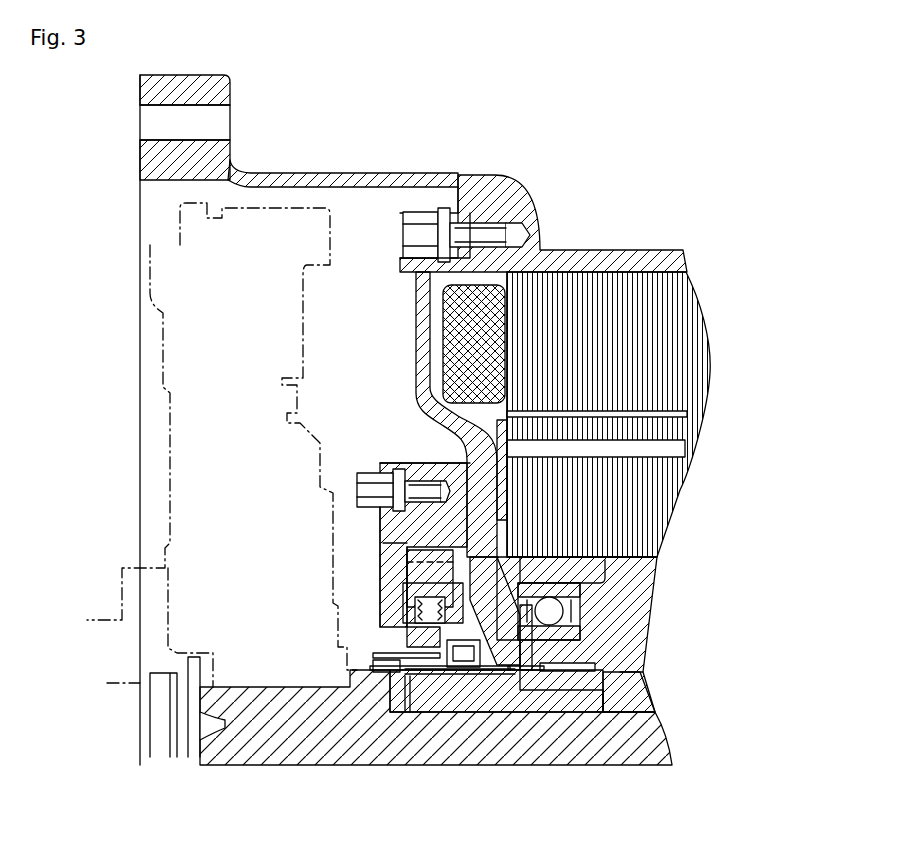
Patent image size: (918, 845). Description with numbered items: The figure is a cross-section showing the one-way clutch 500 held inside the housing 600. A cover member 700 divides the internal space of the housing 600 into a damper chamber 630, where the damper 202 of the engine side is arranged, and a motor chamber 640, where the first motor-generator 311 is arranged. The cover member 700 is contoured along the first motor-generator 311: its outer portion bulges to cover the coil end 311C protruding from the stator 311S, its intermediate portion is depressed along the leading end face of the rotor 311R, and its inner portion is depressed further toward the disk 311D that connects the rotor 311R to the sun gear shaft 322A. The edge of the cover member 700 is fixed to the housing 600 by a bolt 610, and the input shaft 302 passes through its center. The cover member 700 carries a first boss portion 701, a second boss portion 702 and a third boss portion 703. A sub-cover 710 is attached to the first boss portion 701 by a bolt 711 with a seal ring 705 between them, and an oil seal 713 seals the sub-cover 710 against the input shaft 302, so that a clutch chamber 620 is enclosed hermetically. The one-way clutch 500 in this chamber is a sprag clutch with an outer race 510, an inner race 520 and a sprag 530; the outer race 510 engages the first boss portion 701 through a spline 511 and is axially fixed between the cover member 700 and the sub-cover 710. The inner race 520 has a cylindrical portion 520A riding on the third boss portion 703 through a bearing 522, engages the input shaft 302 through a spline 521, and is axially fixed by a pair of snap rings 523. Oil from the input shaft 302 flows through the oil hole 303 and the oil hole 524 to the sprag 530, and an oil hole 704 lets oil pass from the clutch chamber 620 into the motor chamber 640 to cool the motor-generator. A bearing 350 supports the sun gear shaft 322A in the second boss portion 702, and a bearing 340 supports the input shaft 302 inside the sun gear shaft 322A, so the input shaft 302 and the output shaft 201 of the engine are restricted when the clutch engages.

The output shaft 201 is at (113, 593).
The damper 202 is at (305, 293).
The input shaft 302 is at (253, 728).
The oil hole 303 is at (408, 712).
The first motor-generator 311 is at (712, 285).
The coil end 311C is at (422, 283).
The disk 311D is at (640, 596).
The rotor 311R is at (680, 425).
The stator 311S is at (680, 351).
The sun gear shaft 322A is at (630, 647).
The bearing 340 is at (572, 672).
The bearing 350 is at (590, 612).
The one-way clutch 500 is at (263, 548).
The outer race 510 is at (425, 582).
The spline 511 is at (400, 538).
The inner race 520 is at (413, 630).
The cylindrical portion 520A is at (526, 645).
The spline 521 is at (380, 663).
The bearing 522 is at (463, 660).
The snap rings 523 is at (375, 675).
The oil hole 524 is at (405, 640).
The sprag 530 is at (430, 612).
The housing 600 is at (493, 198).
The bolt 610 is at (416, 212).
The clutch chamber 620 is at (600, 665).
The damper chamber 630 is at (350, 213).
The motor chamber 640 is at (485, 432).
The cover member 700 is at (420, 335).
The first boss portion 701 is at (413, 465).
The second boss portion 702 is at (580, 577).
The third boss portion 703 is at (487, 665).
The oil hole 704 is at (478, 530).
The seal ring 705 is at (400, 525).
The sub-cover 710 is at (395, 470).
The bolt 711 is at (357, 493).
The oil seal 713 is at (358, 672).